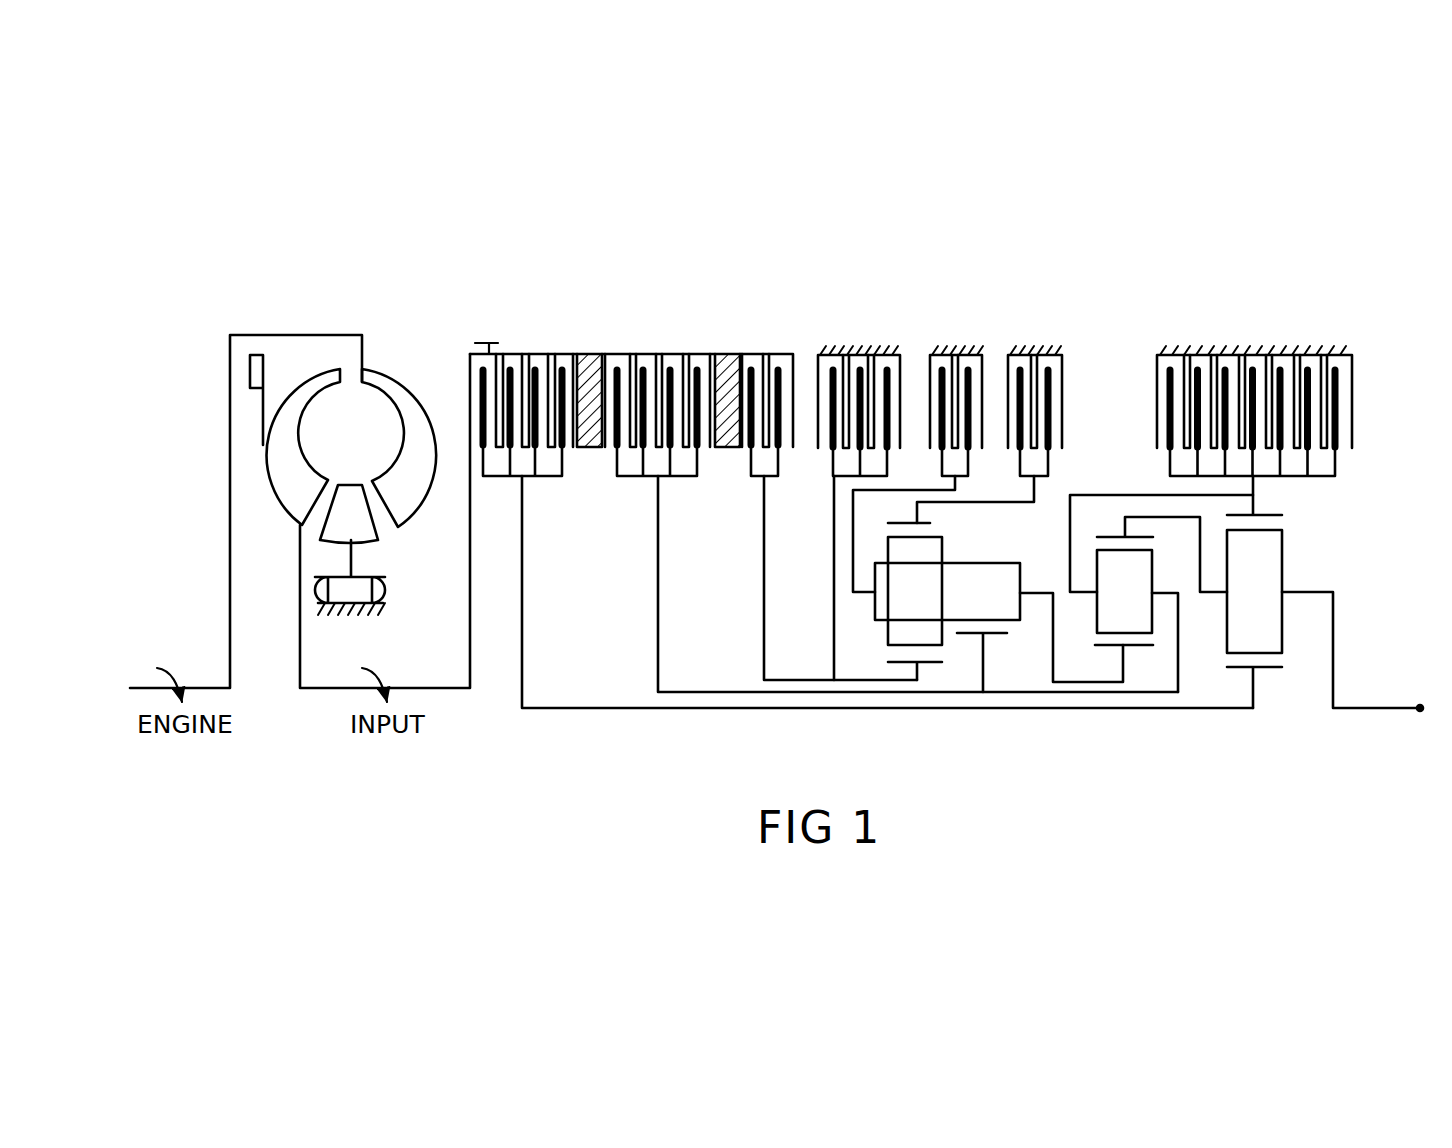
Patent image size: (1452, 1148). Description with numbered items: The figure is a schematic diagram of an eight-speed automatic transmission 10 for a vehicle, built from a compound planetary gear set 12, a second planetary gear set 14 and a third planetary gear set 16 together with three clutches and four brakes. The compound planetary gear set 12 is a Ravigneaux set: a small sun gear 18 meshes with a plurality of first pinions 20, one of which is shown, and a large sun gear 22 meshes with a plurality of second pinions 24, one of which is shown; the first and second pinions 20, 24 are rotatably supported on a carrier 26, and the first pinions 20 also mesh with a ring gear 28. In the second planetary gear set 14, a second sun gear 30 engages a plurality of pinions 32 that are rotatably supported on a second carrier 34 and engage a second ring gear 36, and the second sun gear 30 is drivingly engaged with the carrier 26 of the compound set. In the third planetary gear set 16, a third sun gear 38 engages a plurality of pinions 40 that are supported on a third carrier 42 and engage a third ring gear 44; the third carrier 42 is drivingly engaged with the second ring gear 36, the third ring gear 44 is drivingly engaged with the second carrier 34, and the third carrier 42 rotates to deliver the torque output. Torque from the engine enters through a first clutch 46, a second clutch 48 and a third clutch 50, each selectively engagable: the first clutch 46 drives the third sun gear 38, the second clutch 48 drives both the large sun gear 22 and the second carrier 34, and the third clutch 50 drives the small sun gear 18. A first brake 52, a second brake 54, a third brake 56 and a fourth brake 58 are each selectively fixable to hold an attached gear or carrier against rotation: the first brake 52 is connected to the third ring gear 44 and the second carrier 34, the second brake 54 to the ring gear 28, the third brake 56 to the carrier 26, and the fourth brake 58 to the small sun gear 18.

The eight-speed automatic transmission 10 is at (1115, 241).
The compound planetary gear set 12 is at (982, 634).
The second planetary gear set 14 is at (1205, 617).
The third planetary gear set 16 is at (1352, 667).
The small sun gear 18 is at (922, 664).
The first pinions 20 is at (888, 633).
The large sun gear 22 is at (1000, 634).
The second pinions 24 is at (1010, 612).
The carrier 26 is at (1037, 590).
The ring gear 28 is at (932, 522).
The second sun gear 30 is at (1112, 647).
The pinions 32 is at (1143, 562).
The second carrier 34 is at (1170, 586).
The second ring gear 36 is at (1115, 537).
The third sun gear 38 is at (1247, 667).
The pinions 40 is at (1272, 548).
The third carrier 42 is at (1300, 592).
The third ring gear 44 is at (1265, 515).
The first clutch 46 is at (543, 318).
The second clutch 48 is at (675, 314).
The third clutch 50 is at (784, 316).
The first brake 52 is at (1269, 311).
The second brake 54 is at (1056, 308).
The third brake 56 is at (972, 308).
The fourth brake 58 is at (887, 312).